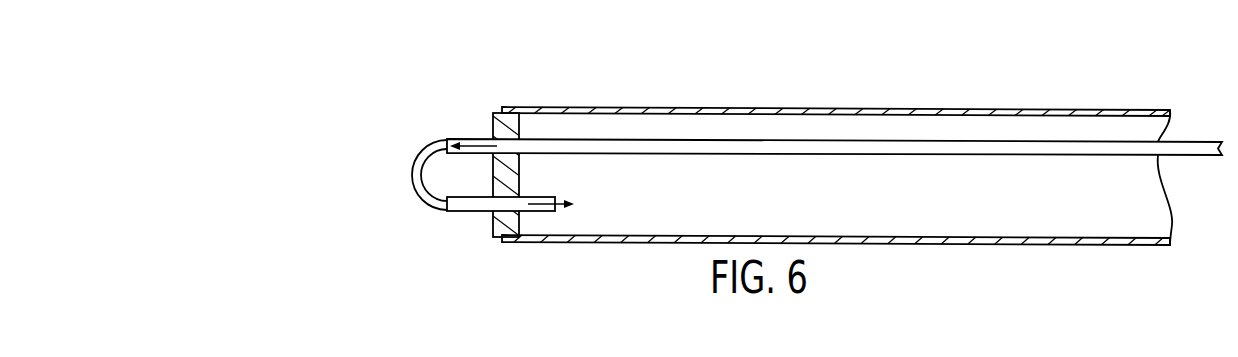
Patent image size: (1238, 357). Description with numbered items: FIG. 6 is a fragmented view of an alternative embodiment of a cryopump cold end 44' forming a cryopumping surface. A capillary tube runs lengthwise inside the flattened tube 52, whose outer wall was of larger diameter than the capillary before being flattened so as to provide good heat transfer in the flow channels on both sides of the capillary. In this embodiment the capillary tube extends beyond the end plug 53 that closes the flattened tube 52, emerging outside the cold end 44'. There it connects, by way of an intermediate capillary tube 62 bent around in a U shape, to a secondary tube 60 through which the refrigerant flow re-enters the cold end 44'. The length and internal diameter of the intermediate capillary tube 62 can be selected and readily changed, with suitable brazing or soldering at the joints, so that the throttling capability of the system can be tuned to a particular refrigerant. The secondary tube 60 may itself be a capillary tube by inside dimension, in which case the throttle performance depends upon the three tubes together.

The cryopump cold end 44' is at (777, 162).
The flattened tube 52 is at (832, 240).
The end plug 53 is at (493, 117).
The secondary tube 60 is at (533, 193).
The intermediate capillary tube 62 is at (413, 174).